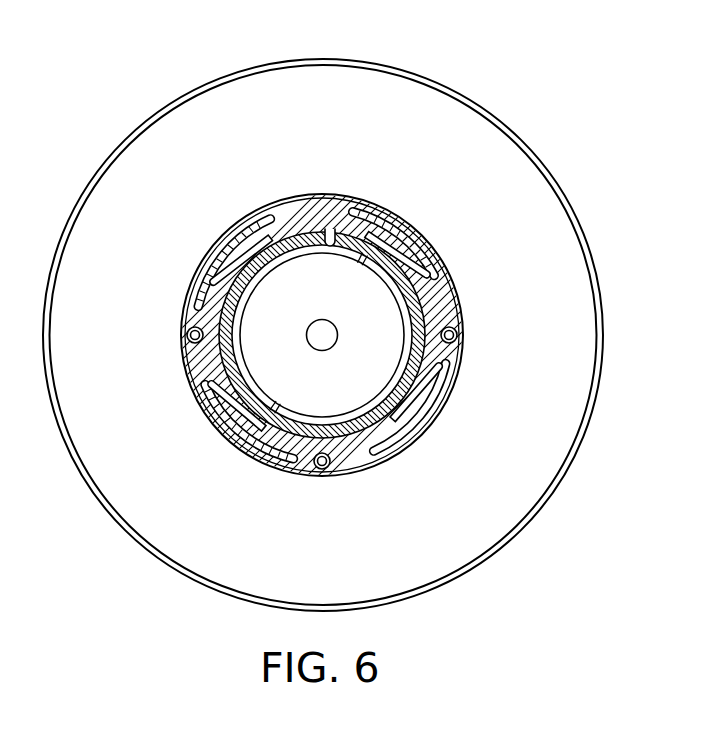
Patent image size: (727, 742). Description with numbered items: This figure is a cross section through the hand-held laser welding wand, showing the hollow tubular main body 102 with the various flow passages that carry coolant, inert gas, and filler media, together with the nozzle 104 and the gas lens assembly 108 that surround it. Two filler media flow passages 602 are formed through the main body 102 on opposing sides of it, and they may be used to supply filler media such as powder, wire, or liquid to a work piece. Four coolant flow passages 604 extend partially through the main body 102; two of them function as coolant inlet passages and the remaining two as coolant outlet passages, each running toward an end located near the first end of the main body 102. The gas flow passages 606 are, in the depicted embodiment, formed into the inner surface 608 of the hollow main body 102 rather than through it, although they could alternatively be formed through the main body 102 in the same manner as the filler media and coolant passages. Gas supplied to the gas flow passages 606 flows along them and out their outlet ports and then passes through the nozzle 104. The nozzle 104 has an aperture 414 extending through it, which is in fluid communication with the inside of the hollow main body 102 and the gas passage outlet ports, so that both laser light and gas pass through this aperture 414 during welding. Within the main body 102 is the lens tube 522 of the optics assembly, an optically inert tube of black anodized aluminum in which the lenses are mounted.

The main body 102 is at (458, 290).
The nozzle 104 is at (303, 240).
The gas lens assembly 108 is at (416, 86).
The aperture 414 is at (323, 348).
The lens tube 522 is at (225, 334).
The filler media flow passage 602 is at (192, 332).
The coolant flow passage 604 is at (395, 478).
The gas flow passage 606 is at (238, 255).
The inner surface 608 is at (336, 230).